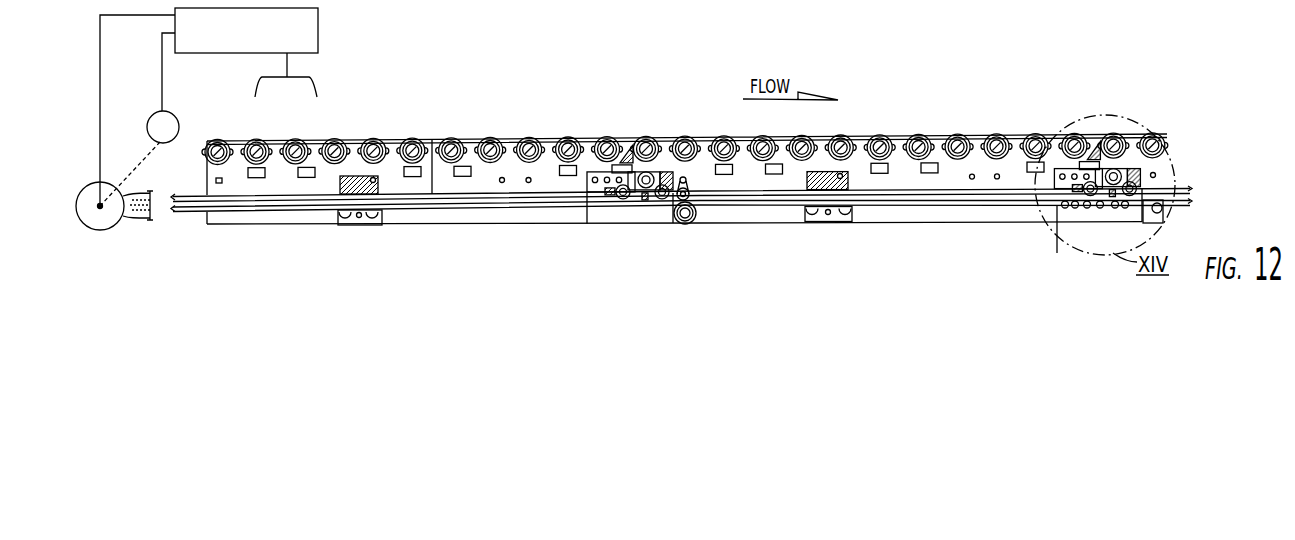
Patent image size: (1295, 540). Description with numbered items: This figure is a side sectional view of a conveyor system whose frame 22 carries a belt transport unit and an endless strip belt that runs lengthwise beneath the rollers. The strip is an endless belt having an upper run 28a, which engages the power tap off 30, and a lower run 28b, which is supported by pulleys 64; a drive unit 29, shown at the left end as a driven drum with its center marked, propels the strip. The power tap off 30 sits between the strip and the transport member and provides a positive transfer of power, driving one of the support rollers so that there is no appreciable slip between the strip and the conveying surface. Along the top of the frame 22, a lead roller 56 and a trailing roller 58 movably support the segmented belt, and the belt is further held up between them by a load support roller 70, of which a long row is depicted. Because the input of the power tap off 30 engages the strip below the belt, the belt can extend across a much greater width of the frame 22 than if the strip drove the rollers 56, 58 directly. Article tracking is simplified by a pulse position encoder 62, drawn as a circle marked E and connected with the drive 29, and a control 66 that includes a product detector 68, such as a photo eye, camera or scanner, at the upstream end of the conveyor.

The frame 22 is at (297, 226).
The upper run 28a is at (432, 140).
The lower run 28b is at (477, 212).
The drive unit 29 is at (100, 230).
The power tap off 30 is at (645, 200).
The lead roller 56 is at (646, 137).
The trailing roller 58 is at (225, 139).
The pulse position encoder 62 is at (172, 114).
The pulleys 64 is at (697, 218).
The control 66 is at (318, 27).
The product detector 68 is at (317, 90).
The load support roller 70 is at (297, 139).